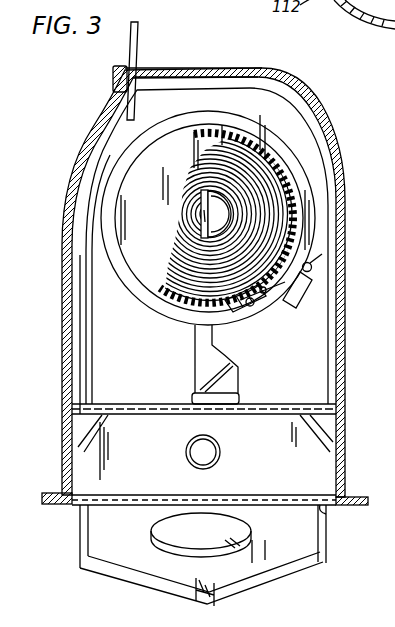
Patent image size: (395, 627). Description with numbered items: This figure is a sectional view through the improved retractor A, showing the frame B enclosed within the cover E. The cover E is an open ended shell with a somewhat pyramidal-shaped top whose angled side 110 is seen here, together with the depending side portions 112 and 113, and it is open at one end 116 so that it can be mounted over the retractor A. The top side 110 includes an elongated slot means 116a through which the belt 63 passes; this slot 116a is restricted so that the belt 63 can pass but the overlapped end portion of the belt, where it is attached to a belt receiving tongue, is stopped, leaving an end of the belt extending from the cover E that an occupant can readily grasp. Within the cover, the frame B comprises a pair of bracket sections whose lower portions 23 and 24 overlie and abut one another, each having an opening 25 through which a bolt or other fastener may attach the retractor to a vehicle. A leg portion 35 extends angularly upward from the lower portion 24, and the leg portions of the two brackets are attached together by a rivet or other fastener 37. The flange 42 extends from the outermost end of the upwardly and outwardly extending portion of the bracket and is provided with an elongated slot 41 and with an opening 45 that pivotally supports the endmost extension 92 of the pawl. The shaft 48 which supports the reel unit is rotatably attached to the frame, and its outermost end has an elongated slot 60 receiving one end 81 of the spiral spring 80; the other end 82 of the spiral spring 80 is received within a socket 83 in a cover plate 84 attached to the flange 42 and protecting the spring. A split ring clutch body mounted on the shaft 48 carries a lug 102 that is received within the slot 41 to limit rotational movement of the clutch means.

The lower portion 23 is at (301, 568).
The lower portion 24 is at (321, 546).
The opening 25 is at (233, 546).
The leg portion 35 is at (312, 458).
The rivet or other fastener 37 is at (188, 452).
The elongated slot 41 is at (305, 283).
The flange portion 42 is at (319, 362).
The opening 45 is at (194, 352).
The shaft 48 is at (196, 197).
The elongated slot 60 is at (194, 220).
The belt 63 is at (141, 35).
The spiral spring 80 is at (298, 198).
The end of spiral spring 81 is at (204, 224).
The other end of spiral spring 82 is at (270, 303).
The socket 83 is at (251, 302).
The cover plate 84 is at (300, 227).
The endmost extension 92 is at (193, 378).
The lug 102 is at (315, 266).
The angled side 110 is at (244, 70).
The depending side portion 112 is at (64, 282).
The depending side portion 113 is at (344, 318).
The open end 116 is at (325, 505).
The elongated slot means 116a is at (118, 64).
The retractor A is at (88, 595).
The frame B is at (69, 537).
The cover E is at (336, 110).